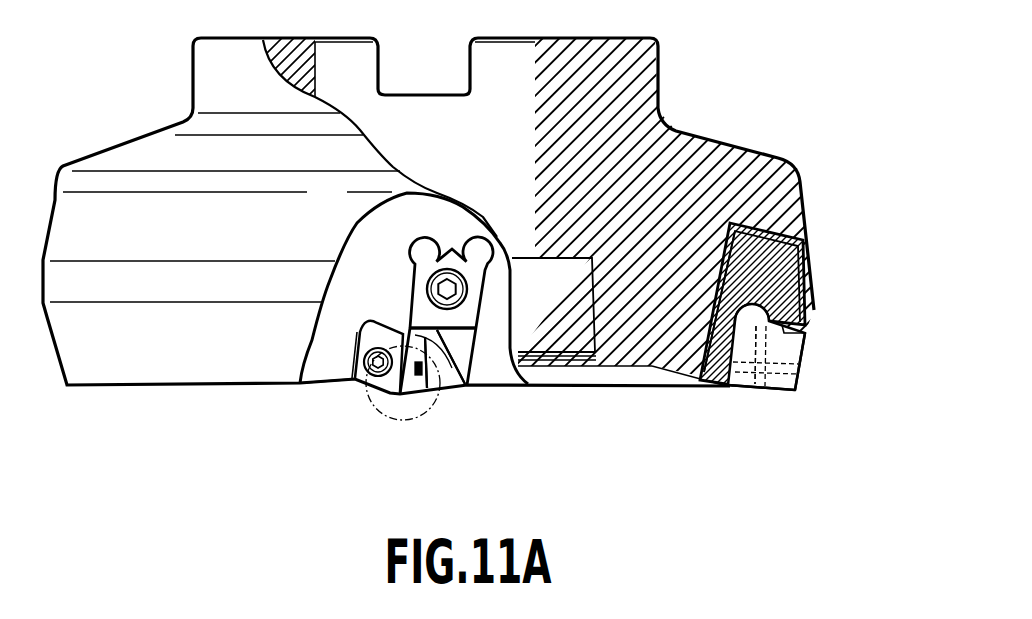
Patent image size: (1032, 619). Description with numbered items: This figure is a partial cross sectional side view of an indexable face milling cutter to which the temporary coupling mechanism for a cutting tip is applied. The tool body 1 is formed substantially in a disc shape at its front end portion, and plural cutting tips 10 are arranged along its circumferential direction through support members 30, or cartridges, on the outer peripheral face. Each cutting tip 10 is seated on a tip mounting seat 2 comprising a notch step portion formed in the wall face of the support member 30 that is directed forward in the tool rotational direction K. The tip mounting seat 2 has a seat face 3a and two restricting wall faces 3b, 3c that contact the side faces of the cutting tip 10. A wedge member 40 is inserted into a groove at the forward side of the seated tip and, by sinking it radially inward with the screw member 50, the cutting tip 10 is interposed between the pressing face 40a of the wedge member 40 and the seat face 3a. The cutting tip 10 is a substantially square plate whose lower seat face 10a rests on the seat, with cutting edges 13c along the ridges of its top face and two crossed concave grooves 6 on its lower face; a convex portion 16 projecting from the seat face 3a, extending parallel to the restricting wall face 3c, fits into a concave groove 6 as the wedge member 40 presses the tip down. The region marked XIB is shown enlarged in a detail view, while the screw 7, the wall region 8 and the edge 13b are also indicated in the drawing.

The tool body 1 is at (763, 136).
The tip mounting seat 2 is at (400, 397).
The seat face 3a is at (407, 405).
The restricting wall face 3b is at (737, 345).
The restricting wall face 3c is at (806, 333).
The concave groove 6 is at (397, 337).
The clamp screw 7 is at (460, 252).
The shim seat surface 8 is at (353, 377).
The cutting tip 10 is at (386, 404).
The seat face 10a is at (447, 337).
The insert side face 13b is at (798, 393).
The cutting edge 13c is at (789, 400).
The convex portion 16 is at (466, 388).
The support member 30 is at (397, 273).
The wedge member 40 is at (340, 329).
The pressing face 40a is at (440, 338).
The screw member 50 is at (367, 388).
The tool rotational direction K is at (290, 426).
The XIB portion XIB is at (430, 413).